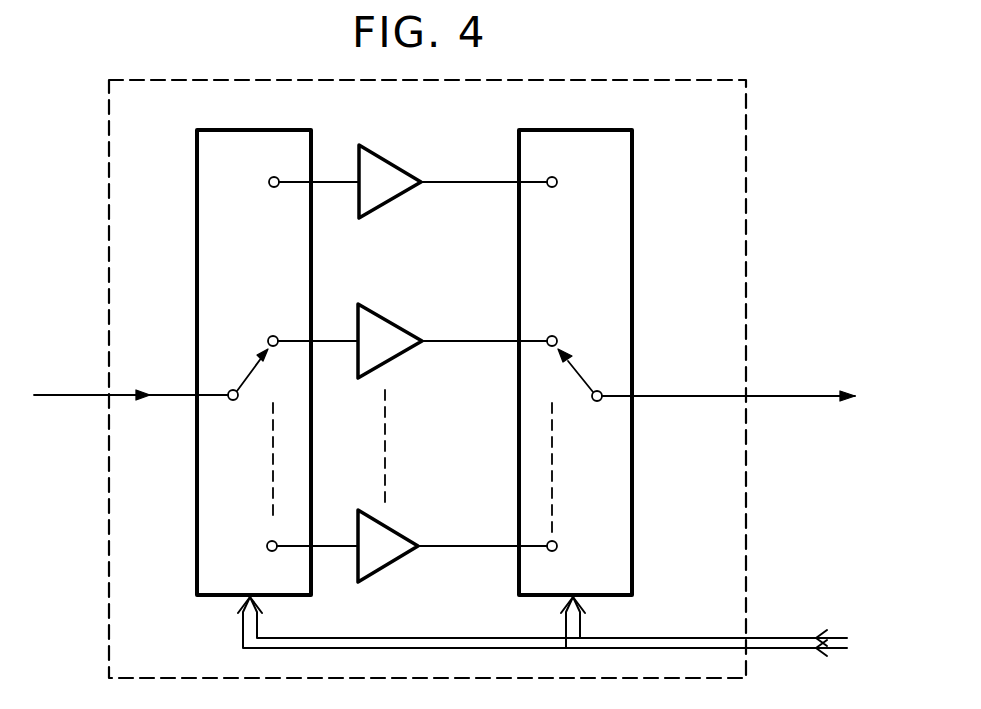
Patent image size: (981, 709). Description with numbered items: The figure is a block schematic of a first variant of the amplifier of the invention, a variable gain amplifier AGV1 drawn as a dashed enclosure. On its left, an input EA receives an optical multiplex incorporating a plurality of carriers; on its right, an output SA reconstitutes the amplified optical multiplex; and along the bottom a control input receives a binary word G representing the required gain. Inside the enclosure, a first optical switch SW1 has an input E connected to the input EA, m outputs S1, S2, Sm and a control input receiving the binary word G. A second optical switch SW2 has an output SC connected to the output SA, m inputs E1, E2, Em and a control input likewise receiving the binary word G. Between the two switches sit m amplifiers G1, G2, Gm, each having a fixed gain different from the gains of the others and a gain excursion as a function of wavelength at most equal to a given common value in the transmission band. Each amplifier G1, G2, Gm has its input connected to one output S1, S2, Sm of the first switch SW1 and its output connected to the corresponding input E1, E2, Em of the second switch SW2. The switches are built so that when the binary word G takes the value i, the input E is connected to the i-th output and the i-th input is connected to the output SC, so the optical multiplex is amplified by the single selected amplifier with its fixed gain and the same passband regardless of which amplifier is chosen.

The variable gain amplifier AGV1 is at (687, 102).
The first optical switch SW1 is at (223, 148).
The second optical switch SW2 is at (594, 150).
The first output of the first switch S1 is at (273, 188).
The second output of the first switch S2 is at (273, 336).
The m-th output of the first switch Sm is at (268, 544).
The input of the first switch E is at (233, 388).
The input EA is at (61, 393).
The first amplifier G1 is at (383, 183).
The second amplifier G2 is at (388, 343).
The m-th amplifier Gm is at (385, 550).
The first input of the second switch E1 is at (553, 190).
The second input of the second switch E2 is at (552, 336).
The m-th input of the second switch Em is at (556, 544).
The output of the second switch SC is at (597, 402).
The output SA is at (818, 393).
The binary word G is at (560, 627).